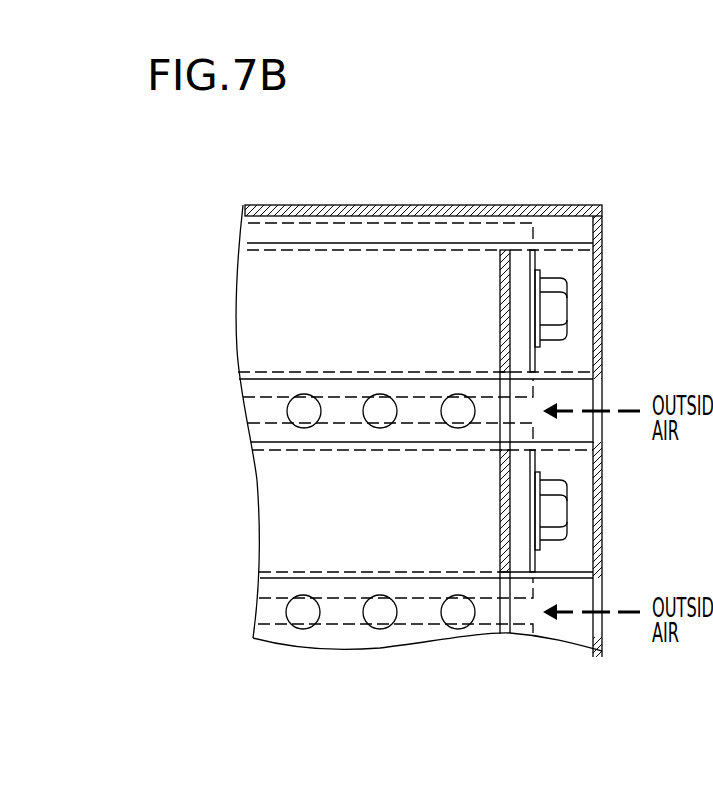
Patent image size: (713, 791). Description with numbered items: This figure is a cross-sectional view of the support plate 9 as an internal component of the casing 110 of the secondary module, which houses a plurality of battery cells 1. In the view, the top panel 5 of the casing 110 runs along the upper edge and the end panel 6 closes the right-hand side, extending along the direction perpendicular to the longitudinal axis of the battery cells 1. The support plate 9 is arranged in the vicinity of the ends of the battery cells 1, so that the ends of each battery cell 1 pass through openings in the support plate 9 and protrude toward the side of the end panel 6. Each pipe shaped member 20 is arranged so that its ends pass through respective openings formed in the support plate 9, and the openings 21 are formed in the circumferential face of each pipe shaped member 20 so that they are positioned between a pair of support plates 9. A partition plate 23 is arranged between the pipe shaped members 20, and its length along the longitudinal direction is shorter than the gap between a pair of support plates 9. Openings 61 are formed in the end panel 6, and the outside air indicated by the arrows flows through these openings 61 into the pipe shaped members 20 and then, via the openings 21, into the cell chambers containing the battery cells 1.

The casing 110 is at (338, 200).
The top panel 5 is at (402, 206).
The end panel 6 is at (600, 284).
The openings 61 is at (598, 386).
The partition plate 23 is at (270, 277).
The pipe shaped member 20 is at (583, 247).
The openings 21 is at (397, 412).
The support plate 9 is at (502, 262).
The battery cell 1 is at (523, 265).